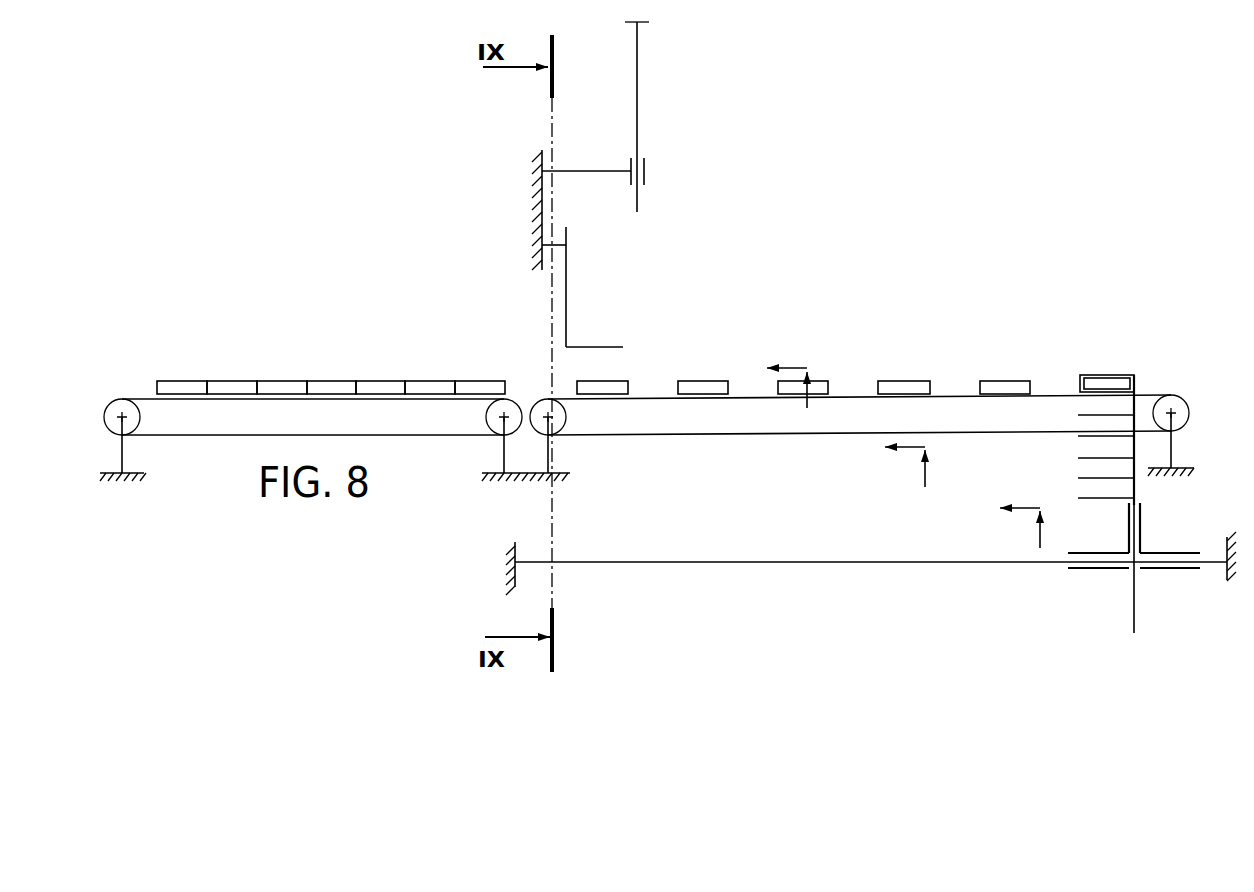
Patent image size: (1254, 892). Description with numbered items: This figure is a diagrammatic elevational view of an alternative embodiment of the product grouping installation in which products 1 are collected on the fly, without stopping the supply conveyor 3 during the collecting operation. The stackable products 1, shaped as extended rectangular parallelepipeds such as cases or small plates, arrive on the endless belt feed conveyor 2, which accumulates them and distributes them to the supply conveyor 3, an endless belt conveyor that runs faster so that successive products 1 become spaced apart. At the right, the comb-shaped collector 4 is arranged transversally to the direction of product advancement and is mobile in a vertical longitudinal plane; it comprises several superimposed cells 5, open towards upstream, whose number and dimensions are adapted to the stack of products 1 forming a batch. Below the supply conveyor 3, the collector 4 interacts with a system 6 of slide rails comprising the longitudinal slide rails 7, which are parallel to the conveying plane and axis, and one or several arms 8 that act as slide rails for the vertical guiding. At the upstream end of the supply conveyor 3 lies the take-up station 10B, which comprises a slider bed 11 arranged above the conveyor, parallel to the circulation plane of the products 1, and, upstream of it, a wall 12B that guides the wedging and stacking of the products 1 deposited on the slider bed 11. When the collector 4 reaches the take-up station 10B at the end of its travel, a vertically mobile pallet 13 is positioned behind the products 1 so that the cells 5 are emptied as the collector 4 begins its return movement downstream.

The products 1 is at (443, 387).
The feed conveyor 2 is at (140, 394).
The supply conveyor 3 is at (849, 395).
The collector 4 is at (1123, 374).
The cells 5 is at (1085, 374).
The system of slide rails 6 is at (1156, 539).
The slide rails 7 is at (877, 563).
The arms 8 is at (1132, 607).
The take-up station 10B is at (558, 315).
The slider bed 11 is at (600, 347).
The wall 12B is at (566, 258).
The pallet 13 is at (646, 134).